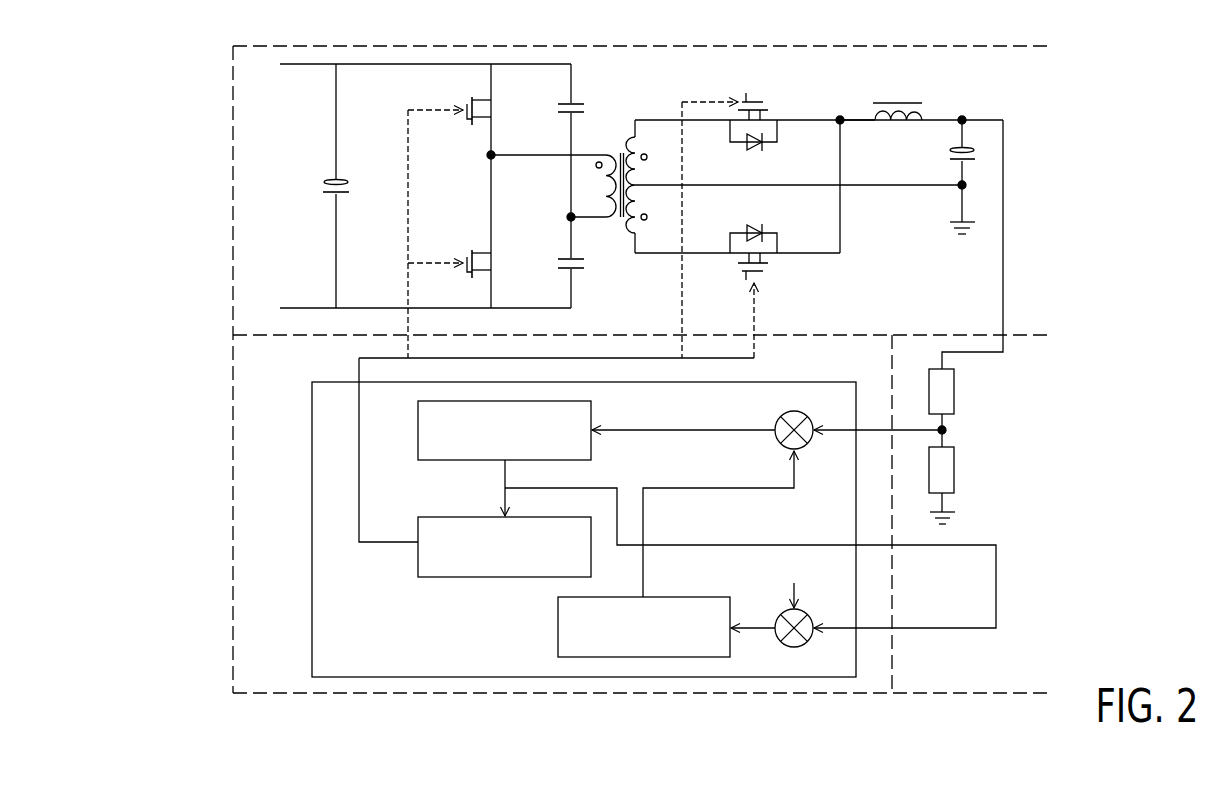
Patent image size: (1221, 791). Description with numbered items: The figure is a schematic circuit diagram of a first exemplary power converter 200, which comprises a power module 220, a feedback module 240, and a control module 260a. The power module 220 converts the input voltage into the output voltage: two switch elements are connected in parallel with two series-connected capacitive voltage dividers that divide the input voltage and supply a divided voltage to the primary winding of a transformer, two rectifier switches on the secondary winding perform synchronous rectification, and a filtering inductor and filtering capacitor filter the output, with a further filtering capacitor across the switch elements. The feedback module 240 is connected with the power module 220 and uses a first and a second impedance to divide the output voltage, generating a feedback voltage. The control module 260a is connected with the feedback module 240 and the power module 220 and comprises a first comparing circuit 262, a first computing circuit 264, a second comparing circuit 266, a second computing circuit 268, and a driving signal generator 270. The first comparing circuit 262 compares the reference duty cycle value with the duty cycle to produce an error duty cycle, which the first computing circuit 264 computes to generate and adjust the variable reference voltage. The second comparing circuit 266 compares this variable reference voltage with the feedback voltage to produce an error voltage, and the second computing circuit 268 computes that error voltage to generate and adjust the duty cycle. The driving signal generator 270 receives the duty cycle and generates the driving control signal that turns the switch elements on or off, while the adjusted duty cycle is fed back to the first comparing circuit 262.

The power converter 200 is at (641, 390).
The power module 220 is at (915, 305).
The feedback module 240 is at (1038, 503).
The control module 260a is at (340, 630).
The first comparing circuit 262 is at (781, 617).
The first computing circuit 264 is at (558, 625).
The second comparing circuit 266 is at (798, 452).
The second computing circuit 268 is at (592, 411).
The driving signal generator 270 is at (472, 516).